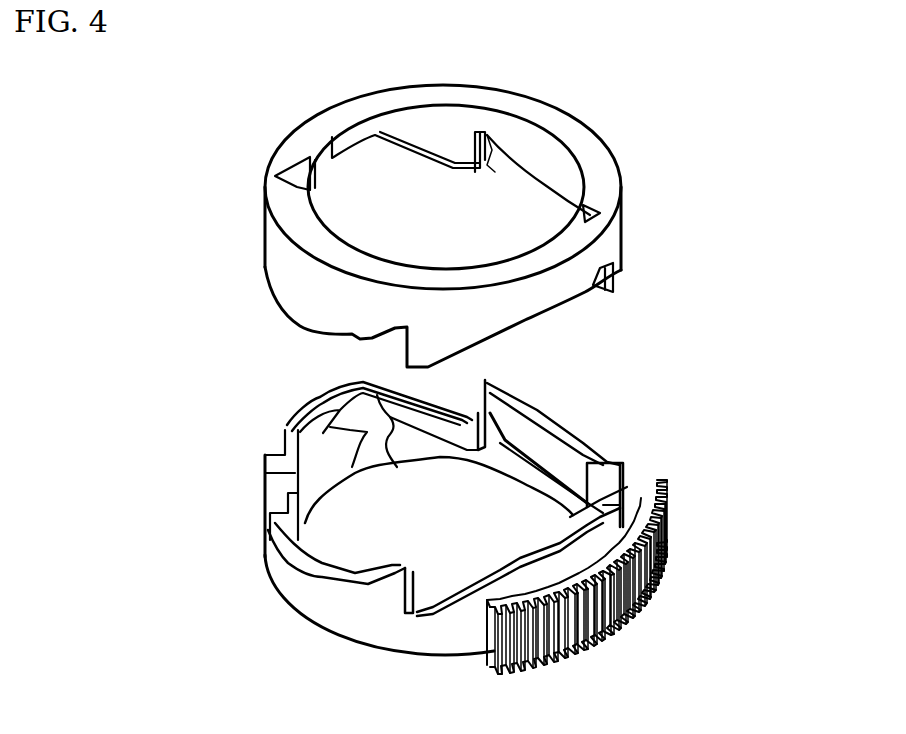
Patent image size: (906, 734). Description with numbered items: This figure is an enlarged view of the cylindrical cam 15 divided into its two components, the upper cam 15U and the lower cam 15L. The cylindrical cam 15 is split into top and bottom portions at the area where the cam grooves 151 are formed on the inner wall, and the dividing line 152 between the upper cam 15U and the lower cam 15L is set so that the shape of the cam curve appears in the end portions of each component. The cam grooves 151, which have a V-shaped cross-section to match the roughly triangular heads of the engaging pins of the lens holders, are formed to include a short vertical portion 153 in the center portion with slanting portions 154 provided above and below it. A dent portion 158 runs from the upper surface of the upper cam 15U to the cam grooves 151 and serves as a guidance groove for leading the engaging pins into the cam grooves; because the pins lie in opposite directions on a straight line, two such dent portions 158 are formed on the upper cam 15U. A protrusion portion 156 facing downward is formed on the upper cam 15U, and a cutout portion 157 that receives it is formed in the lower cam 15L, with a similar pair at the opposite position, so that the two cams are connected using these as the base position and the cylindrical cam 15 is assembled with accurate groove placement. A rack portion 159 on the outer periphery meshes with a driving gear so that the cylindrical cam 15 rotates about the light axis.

The cylindrical cam 15 is at (168, 253).
The upper cam 15U is at (613, 227).
The lower cam 15L is at (265, 572).
The cam grooves 151 is at (493, 170).
The dividing line 152 is at (578, 308).
The short vertical portion 153 is at (383, 432).
The slanting portions 154 is at (345, 432).
The protrusion portion 156 is at (620, 268).
The cutout portion 157 is at (283, 430).
The dent portion 158 is at (295, 175).
The rack portion 159 is at (637, 613).